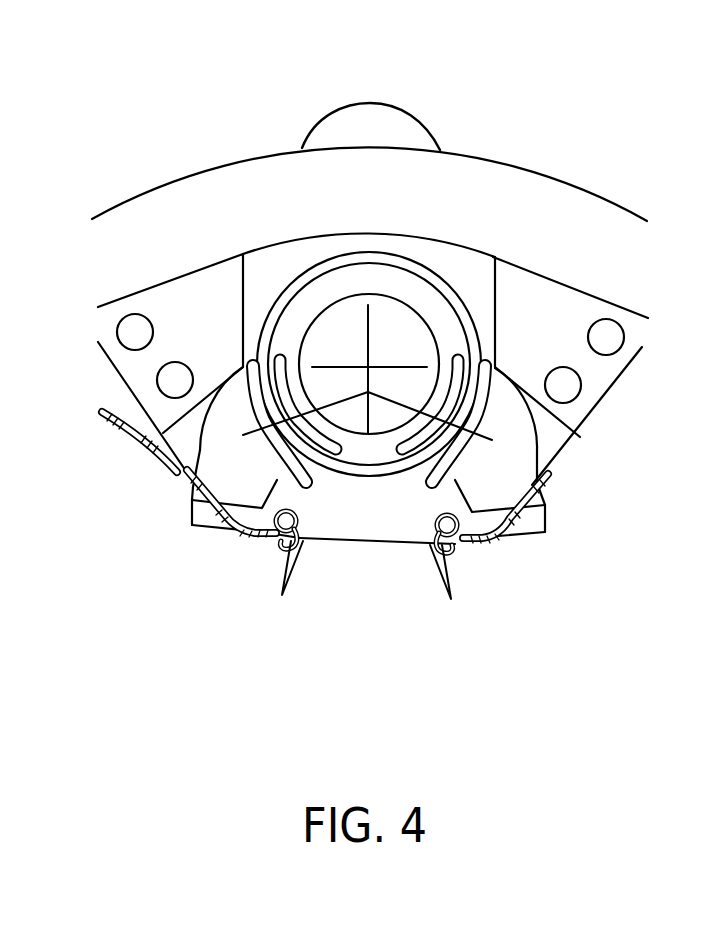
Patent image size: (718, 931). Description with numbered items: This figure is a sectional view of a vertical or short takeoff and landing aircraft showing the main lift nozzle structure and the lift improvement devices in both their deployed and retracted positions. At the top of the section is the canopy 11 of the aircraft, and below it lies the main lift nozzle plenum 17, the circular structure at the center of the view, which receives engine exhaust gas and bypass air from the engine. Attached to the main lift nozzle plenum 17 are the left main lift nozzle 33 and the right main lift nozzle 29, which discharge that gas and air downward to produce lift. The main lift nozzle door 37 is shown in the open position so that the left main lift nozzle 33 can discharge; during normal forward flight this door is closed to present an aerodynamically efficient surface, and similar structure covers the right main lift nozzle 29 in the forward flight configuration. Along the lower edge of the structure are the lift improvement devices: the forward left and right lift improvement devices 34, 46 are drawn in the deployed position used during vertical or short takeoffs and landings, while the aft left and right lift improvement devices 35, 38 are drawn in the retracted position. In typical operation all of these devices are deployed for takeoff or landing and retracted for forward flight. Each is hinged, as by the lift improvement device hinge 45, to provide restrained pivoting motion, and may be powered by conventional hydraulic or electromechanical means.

The canopy 11 is at (393, 107).
The main lift nozzle plenum 17 is at (452, 290).
The right main lift nozzle 29 is at (532, 520).
The left main lift nozzle 33 is at (197, 510).
The forward left lift improvement device 34 is at (297, 552).
The aft left lift improvement device 35 is at (263, 537).
The main lift nozzle door 37 is at (143, 440).
The aft right lift improvement device 38 is at (470, 547).
The lift improvement device hinge 45 is at (423, 543).
The forward right lift improvement device 46 is at (452, 585).